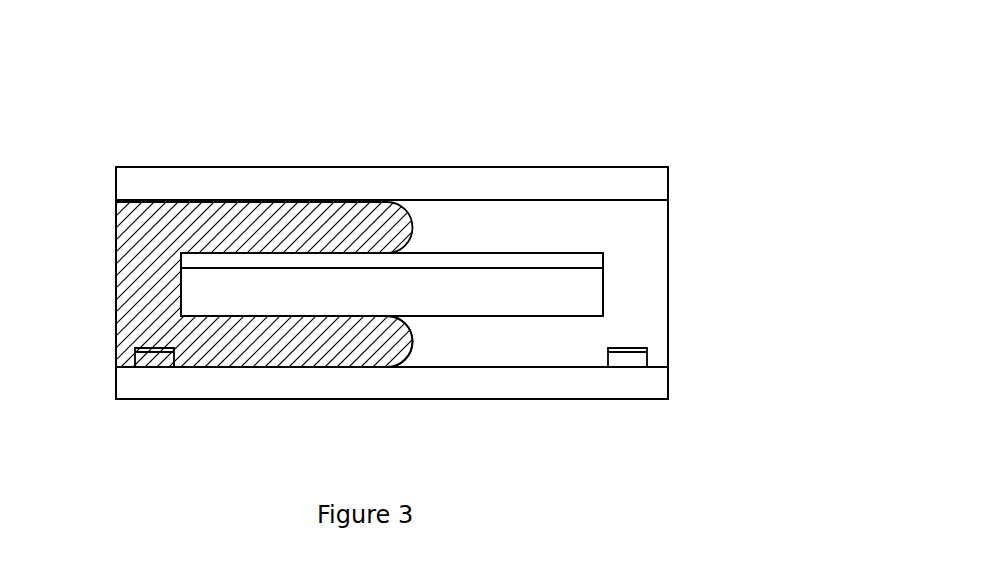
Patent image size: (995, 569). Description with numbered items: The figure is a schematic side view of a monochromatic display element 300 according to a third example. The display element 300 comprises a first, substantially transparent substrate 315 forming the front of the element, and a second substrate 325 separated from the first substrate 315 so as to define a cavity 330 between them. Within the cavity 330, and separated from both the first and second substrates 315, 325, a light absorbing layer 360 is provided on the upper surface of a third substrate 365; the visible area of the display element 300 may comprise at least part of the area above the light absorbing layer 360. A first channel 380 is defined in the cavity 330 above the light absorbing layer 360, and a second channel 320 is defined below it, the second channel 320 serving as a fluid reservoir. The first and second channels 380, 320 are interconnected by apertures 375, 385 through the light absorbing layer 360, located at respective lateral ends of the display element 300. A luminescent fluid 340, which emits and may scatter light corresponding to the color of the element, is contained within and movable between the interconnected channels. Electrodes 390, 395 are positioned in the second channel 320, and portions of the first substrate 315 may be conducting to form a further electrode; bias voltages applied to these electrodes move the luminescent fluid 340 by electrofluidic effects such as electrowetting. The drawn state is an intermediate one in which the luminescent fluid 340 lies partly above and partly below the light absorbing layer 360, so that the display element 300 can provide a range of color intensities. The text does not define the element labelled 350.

The display element 300 is at (96, 91).
The first substantially transparent substrate 315 is at (625, 180).
The second channel 320 is at (556, 360).
The second substrate 325 is at (623, 387).
The cavity 330 is at (656, 300).
The luminescent fluid 340 is at (303, 350).
The lower layer surface 350 is at (473, 350).
The light absorbing layer 360 is at (194, 256).
The third substrate 365 is at (194, 285).
The aperture 375 is at (141, 301).
The first channel 380 is at (512, 218).
The aperture 385 is at (644, 268).
The electrode 390 is at (155, 360).
The electrode 395 is at (641, 358).